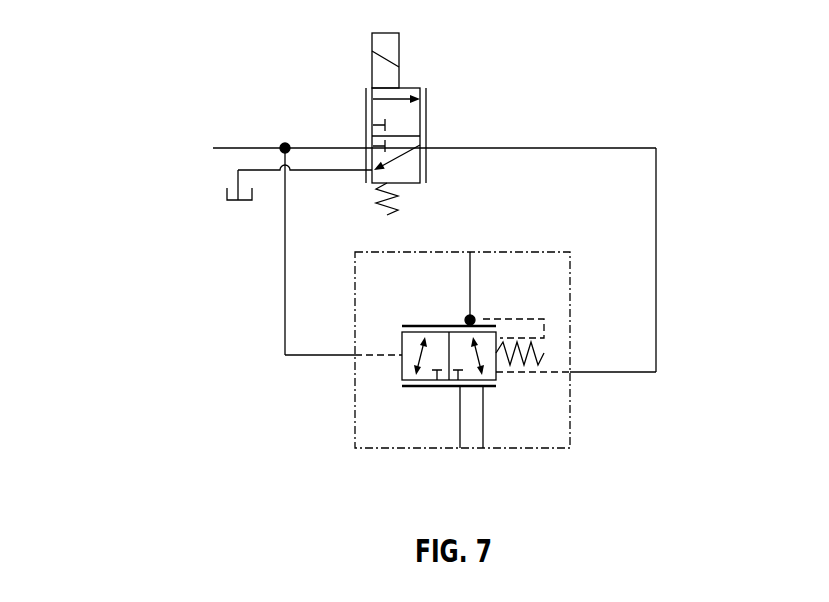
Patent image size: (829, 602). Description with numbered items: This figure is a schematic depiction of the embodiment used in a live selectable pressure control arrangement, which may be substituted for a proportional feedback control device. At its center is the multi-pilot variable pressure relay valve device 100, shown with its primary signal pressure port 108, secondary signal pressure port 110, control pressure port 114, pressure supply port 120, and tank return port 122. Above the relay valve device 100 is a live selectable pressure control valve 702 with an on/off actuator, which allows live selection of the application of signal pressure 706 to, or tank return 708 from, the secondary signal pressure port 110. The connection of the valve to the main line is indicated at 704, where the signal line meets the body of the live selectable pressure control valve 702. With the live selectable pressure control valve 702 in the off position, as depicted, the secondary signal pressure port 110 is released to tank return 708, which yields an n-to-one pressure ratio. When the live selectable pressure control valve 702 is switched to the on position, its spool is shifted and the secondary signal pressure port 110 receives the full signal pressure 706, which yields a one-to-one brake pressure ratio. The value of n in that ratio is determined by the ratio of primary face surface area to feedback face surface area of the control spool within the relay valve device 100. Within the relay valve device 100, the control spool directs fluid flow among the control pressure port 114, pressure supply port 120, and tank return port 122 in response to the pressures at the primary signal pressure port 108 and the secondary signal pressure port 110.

The multi-pilot variable pressure relay valve device 100 is at (558, 242).
The primary signal pressure port 108 is at (355, 360).
The secondary signal pressure port 110 is at (568, 372).
The control pressure port 114 is at (470, 252).
The pressure supply port 120 is at (460, 450).
The tank return port 122 is at (483, 450).
The live selectable pressure control valve 702 is at (422, 110).
The pilot valve inlet port 704 is at (427, 148).
The signal pressure 706 is at (367, 146).
The tank return 708 is at (367, 175).